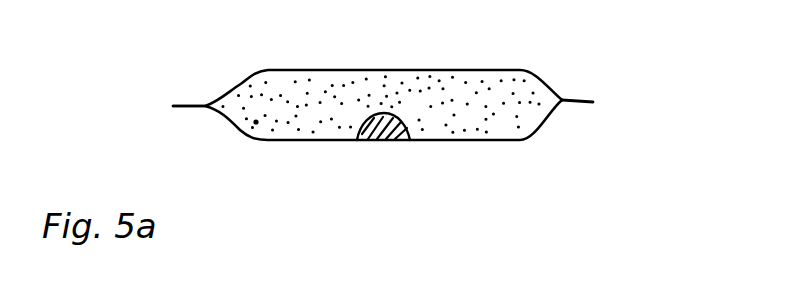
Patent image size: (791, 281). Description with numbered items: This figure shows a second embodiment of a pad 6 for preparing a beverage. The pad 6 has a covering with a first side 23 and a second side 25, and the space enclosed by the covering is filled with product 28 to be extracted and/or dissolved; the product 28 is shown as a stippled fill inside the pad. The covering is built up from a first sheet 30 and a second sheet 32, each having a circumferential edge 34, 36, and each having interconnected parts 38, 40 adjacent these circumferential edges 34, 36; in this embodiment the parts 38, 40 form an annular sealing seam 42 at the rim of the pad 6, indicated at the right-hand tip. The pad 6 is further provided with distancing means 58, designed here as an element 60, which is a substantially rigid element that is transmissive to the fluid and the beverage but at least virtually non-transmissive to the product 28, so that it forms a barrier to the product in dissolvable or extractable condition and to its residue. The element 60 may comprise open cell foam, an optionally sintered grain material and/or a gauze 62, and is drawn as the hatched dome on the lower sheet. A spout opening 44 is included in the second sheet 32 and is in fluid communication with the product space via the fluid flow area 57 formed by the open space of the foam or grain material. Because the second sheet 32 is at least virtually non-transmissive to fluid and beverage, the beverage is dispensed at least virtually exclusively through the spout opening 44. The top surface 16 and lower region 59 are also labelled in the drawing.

The pad 6 is at (684, 183).
The upper surface 16 is at (418, 68).
The first side 23 is at (288, 60).
The second side 25 is at (288, 150).
The product 28 is at (256, 122).
The first sheet 30 is at (450, 68).
The second sheet 32 is at (442, 141).
The circumferential edge 34 is at (565, 94).
The circumferential edge 36 is at (565, 107).
The interconnected part 38 is at (573, 94).
The interconnected part 40 is at (570, 107).
The annular sealing seam 42 is at (592, 102).
The spout opening 44 is at (378, 139).
The fluid flow area 57 is at (365, 133).
The distancing means 58 is at (408, 141).
The active region 59 is at (374, 115).
The element 60 is at (386, 142).
The gauze 62 is at (351, 124).